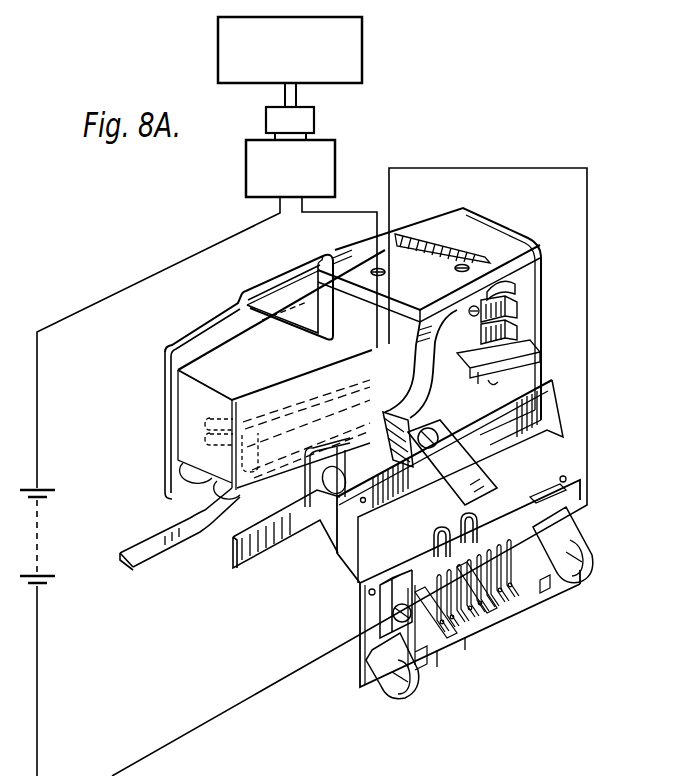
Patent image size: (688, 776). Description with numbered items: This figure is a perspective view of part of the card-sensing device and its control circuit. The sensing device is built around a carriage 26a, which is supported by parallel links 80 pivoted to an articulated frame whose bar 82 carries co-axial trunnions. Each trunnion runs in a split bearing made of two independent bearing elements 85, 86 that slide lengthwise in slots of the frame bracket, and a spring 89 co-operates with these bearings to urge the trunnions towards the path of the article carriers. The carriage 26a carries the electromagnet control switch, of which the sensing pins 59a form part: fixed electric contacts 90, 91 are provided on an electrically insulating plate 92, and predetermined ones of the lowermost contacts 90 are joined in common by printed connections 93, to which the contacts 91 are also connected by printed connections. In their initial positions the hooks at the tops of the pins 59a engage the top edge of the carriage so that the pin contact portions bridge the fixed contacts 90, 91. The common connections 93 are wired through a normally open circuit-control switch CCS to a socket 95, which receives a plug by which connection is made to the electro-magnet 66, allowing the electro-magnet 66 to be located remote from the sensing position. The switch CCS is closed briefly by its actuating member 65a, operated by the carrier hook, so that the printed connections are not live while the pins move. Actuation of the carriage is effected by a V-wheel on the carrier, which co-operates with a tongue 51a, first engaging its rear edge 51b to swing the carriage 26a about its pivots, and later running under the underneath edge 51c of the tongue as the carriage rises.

The electro-magnet 66 is at (294, 60).
The socket 95 is at (258, 165).
The circuit-control switch CCS is at (230, 357).
The spring 89 is at (510, 280).
The bearing element 86 is at (510, 303).
The bearing element 85 is at (512, 326).
The bar 82 is at (442, 372).
The parallel links 80 is at (480, 493).
The carriage 26a is at (572, 485).
The sensing pins 59a is at (464, 516).
The rear edge 51b is at (380, 437).
The tongue 51a is at (293, 523).
The underneath edge 51c is at (320, 520).
The actuating member 65a is at (150, 532).
The fixed electric contacts 90 is at (503, 603).
The fixed electric contacts 91 is at (515, 587).
The electrically insulating plate 92 is at (540, 570).
The printed connections 93 is at (441, 643).